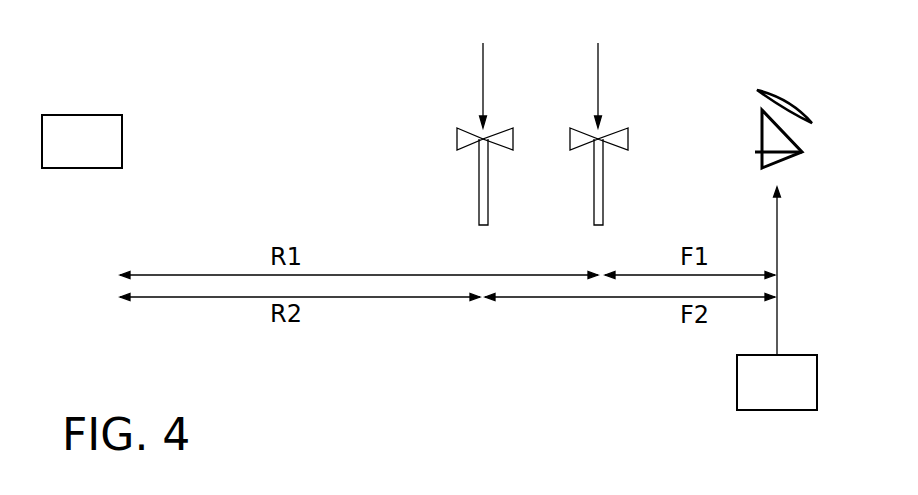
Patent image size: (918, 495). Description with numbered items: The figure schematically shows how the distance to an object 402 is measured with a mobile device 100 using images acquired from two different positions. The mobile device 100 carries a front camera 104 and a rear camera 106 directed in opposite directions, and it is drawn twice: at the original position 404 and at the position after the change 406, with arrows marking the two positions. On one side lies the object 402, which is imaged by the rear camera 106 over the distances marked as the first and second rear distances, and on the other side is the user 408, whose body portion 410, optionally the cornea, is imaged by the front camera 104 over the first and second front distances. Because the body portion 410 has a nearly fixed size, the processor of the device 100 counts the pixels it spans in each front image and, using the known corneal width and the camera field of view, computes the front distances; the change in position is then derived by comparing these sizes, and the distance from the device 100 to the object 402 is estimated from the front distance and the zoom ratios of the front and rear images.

The mobile device 100 is at (479, 222).
The front camera 104 is at (513, 129).
The rear camera 106 is at (457, 142).
The object 402 is at (78, 115).
The original position 404 is at (623, 32).
The position after the change 406 is at (507, 32).
The user 408 is at (802, 395).
The body portion 410 is at (807, 108).